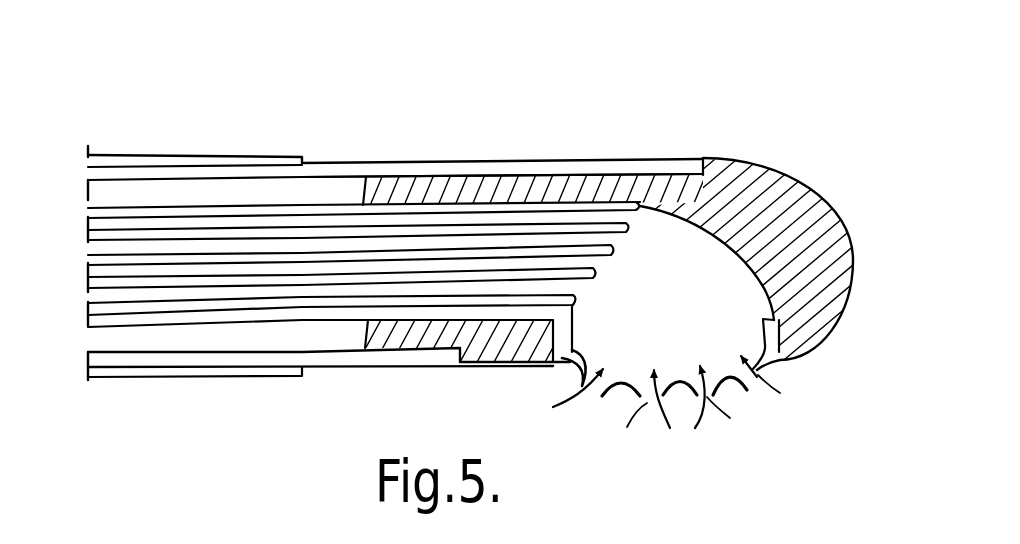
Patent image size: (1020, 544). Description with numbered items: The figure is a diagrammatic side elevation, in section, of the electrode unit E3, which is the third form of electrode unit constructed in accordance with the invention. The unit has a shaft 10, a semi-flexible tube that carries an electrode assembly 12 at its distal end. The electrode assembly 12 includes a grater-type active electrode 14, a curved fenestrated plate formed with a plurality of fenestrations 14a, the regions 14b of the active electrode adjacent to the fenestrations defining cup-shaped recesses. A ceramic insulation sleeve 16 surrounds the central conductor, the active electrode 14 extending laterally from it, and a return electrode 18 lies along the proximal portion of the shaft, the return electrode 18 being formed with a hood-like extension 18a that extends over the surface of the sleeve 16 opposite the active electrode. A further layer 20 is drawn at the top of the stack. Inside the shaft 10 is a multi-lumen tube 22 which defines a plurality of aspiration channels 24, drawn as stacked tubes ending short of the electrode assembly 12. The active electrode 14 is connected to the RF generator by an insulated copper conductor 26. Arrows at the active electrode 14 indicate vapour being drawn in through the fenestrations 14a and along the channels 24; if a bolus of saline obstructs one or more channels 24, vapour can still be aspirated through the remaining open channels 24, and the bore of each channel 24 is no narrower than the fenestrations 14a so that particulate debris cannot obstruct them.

The shaft 10 is at (110, 172).
The electrode assembly 12 is at (710, 150).
The active electrode 14 is at (563, 368).
The fenestrations 14a is at (760, 373).
The regions of the active electrode adjacent to the fenestrations 14b is at (590, 383).
The ceramic insulation sleeve 16 is at (827, 230).
The return electrode 18 is at (407, 160).
The hood-like extension 18a is at (588, 168).
The top layer 20 is at (226, 157).
The multi-lumen tube 22 is at (150, 305).
The aspiration channels 24 is at (330, 217).
The insulated copper conductor 26 is at (320, 314).
The electrode unit E3 is at (473, 156).